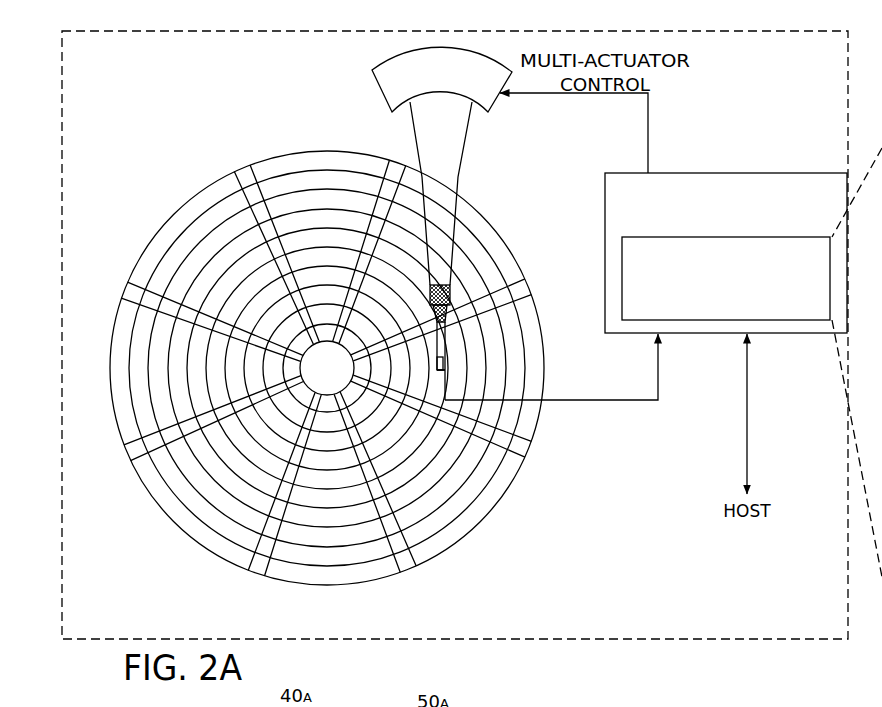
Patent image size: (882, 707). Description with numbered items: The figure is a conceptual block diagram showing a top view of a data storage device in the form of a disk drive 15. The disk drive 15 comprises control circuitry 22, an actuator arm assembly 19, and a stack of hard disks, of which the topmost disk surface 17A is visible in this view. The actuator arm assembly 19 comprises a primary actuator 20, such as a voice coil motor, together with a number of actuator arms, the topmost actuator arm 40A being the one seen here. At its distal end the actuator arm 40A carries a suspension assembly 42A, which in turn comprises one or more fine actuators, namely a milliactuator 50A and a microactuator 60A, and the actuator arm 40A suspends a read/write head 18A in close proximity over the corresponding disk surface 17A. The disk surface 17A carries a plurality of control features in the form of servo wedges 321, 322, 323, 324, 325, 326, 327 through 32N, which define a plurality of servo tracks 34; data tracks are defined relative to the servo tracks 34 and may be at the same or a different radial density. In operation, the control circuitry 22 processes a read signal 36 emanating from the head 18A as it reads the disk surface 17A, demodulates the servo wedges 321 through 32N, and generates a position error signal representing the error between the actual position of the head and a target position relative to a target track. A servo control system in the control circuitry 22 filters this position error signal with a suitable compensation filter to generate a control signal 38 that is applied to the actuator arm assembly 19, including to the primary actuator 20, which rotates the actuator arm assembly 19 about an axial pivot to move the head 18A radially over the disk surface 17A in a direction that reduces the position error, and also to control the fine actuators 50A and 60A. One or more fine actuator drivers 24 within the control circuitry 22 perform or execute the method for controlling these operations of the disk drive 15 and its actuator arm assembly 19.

The disk drive 15 is at (782, 643).
The disk surface 17A is at (180, 203).
The read/write head 18A is at (453, 376).
The actuator arm assembly 19 is at (488, 135).
The primary actuator 20 is at (503, 101).
The control circuitry 22 is at (715, 226).
The fine actuator driver 24 is at (738, 313).
The servo wedge 321 is at (243, 172).
The servo wedge 322 is at (127, 288).
The servo wedge 323 is at (131, 454).
The servo wedge 324 is at (248, 580).
The servo wedge 325 is at (416, 579).
The servo wedge 326 is at (531, 447).
The servo wedge 327 is at (526, 283).
The servo wedge 32N is at (413, 170).
The servo tracks 34 is at (334, 176).
The read signal 36 is at (652, 401).
The control signal 38 is at (650, 127).
The actuator arm 40A is at (458, 176).
The suspension assembly 42A is at (455, 343).
The milliactuator 50A is at (452, 328).
The microactuator 60A is at (452, 360).